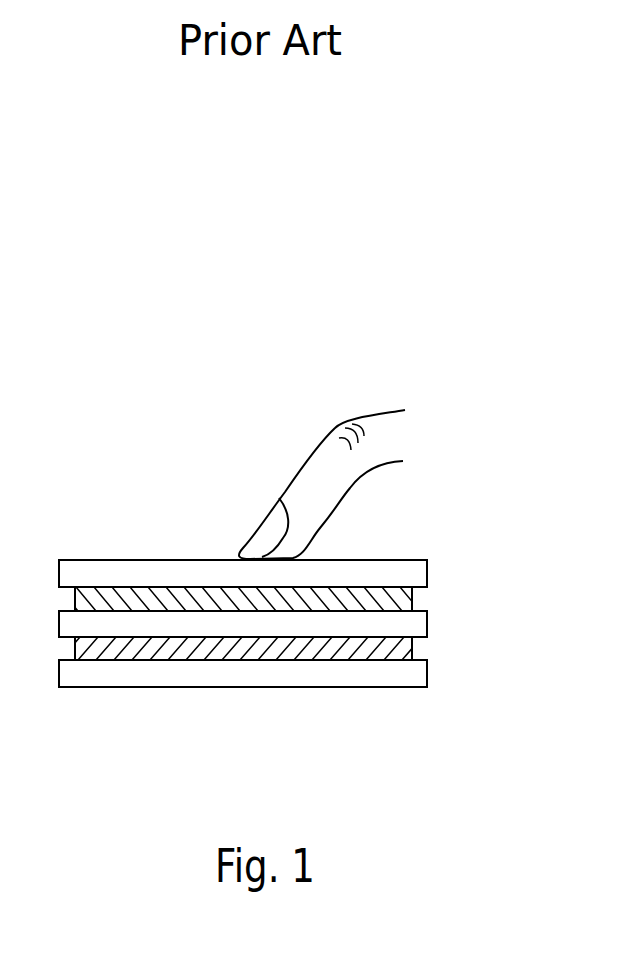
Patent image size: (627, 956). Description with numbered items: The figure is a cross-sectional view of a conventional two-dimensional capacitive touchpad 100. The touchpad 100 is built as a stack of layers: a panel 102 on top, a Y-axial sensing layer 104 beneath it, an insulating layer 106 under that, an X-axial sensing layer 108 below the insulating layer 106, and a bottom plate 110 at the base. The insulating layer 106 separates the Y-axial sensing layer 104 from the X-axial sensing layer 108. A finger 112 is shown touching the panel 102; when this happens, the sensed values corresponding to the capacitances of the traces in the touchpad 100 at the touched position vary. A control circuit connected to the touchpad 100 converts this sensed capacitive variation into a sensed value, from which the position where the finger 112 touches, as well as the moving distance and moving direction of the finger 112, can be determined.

The two-dimensional capacitive touchpad 100 is at (438, 533).
The panel 102 is at (418, 570).
The Y-axial sensing layer 104 is at (407, 598).
The insulating layer 106 is at (420, 620).
The X-axial sensing layer 108 is at (410, 648).
The bottom plate 110 is at (420, 673).
The finger 112 is at (377, 414).